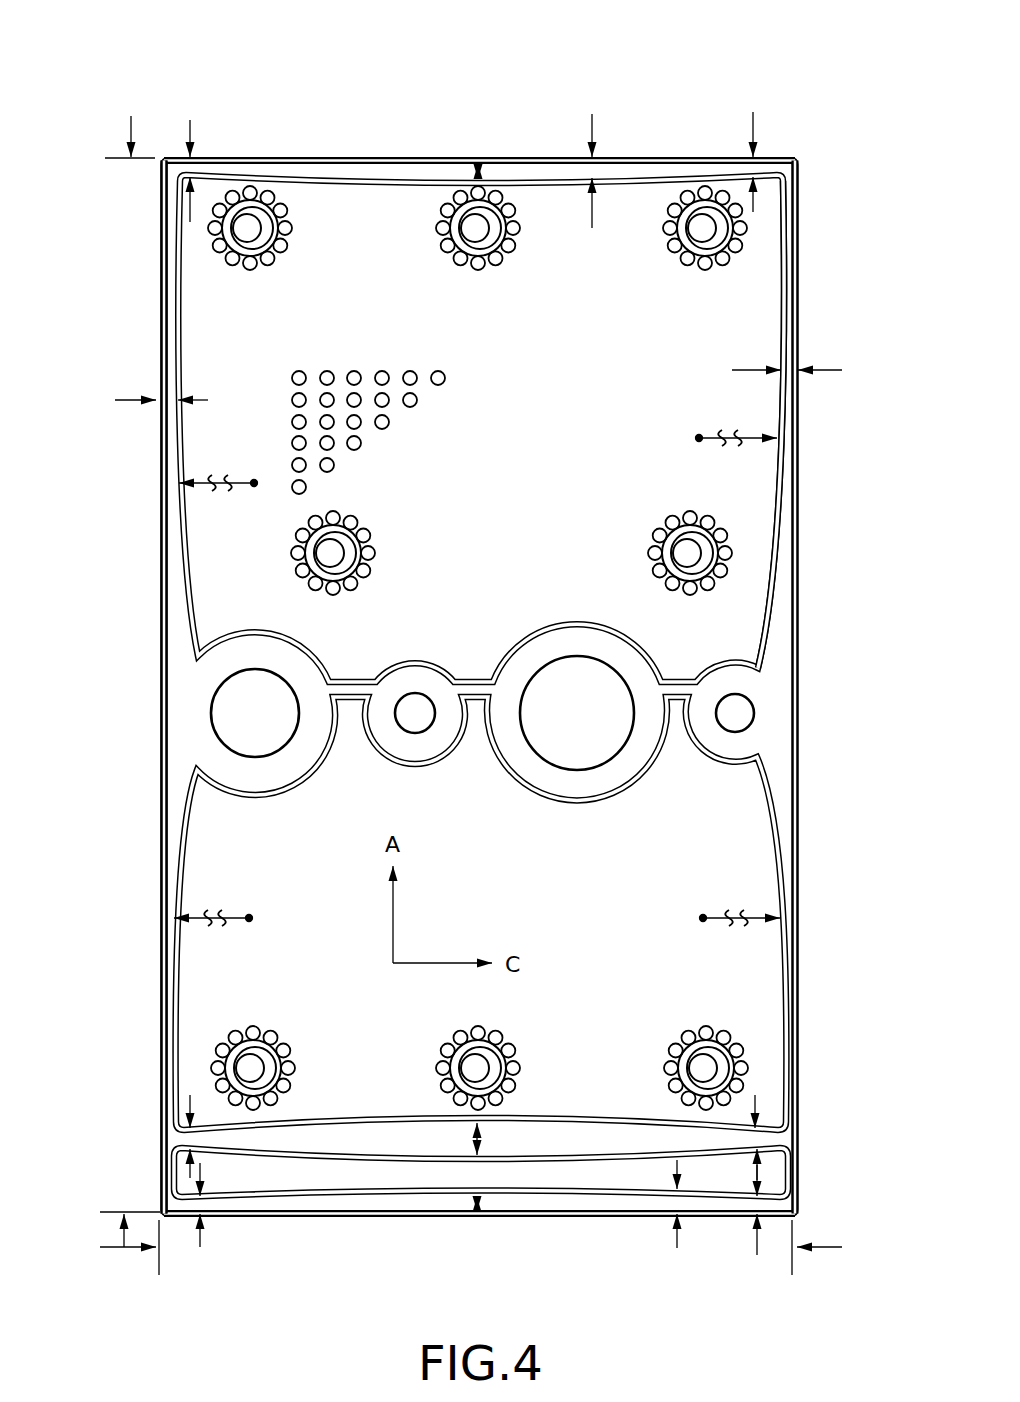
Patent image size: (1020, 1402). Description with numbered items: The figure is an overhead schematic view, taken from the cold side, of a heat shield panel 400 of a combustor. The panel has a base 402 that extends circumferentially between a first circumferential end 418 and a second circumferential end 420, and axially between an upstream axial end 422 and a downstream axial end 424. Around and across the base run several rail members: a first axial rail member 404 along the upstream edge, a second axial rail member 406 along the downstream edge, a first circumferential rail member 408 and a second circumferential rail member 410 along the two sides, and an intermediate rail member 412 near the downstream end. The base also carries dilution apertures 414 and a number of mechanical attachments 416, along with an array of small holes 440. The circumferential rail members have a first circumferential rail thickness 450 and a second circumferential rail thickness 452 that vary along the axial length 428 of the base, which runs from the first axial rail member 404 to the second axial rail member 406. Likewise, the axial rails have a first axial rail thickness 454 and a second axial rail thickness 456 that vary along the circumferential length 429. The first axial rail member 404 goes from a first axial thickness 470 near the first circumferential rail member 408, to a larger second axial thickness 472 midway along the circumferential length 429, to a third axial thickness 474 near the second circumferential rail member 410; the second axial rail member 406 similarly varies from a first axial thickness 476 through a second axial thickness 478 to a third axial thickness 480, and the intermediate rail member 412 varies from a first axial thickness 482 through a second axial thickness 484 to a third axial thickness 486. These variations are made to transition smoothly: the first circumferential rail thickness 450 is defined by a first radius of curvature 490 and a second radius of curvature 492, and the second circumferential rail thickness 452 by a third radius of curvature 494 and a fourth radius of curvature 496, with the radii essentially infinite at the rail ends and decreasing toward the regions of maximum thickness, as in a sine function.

The heat shield panel 400 is at (108, 82).
The base 402 is at (560, 428).
The first axial rail member 404 is at (411, 160).
The second axial rail member 406 is at (278, 1200).
The first circumferential rail member 408 is at (160, 537).
The second circumferential rail member 410 is at (787, 407).
The intermediate rail member 412 is at (337, 1142).
The dilution aperture 414 is at (570, 780).
The mechanical attachment 416 is at (476, 230).
The first circumferential end 418 is at (160, 561).
The second circumferential end 420 is at (796, 482).
The upstream axial end 422 is at (537, 160).
The downstream axial end 424 is at (592, 1218).
The axial length 428 is at (134, 117).
The circumferential length 429 is at (130, 1252).
The hole array 440 is at (383, 423).
The first circumferential rail thickness 450 is at (118, 400).
The second circumferential rail thickness 452 is at (822, 370).
The first axial rail thickness 454 is at (592, 131).
The second axial rail thickness 456 is at (677, 1248).
The first axial thickness 470 is at (192, 122).
The second axial thickness 472 is at (479, 162).
The third axial thickness 474 is at (753, 128).
The first axial thickness 476 is at (200, 1247).
The second axial thickness 478 is at (482, 1212).
The third axial thickness 480 is at (757, 1255).
The first axial thickness 482 is at (190, 1104).
The second axial thickness 484 is at (473, 1140).
The third axial thickness 486 is at (756, 1104).
The first radius of curvature 490 is at (238, 486).
The second radius of curvature 492 is at (232, 921).
The third radius of curvature 494 is at (710, 436).
The fourth radius of curvature 496 is at (717, 923).